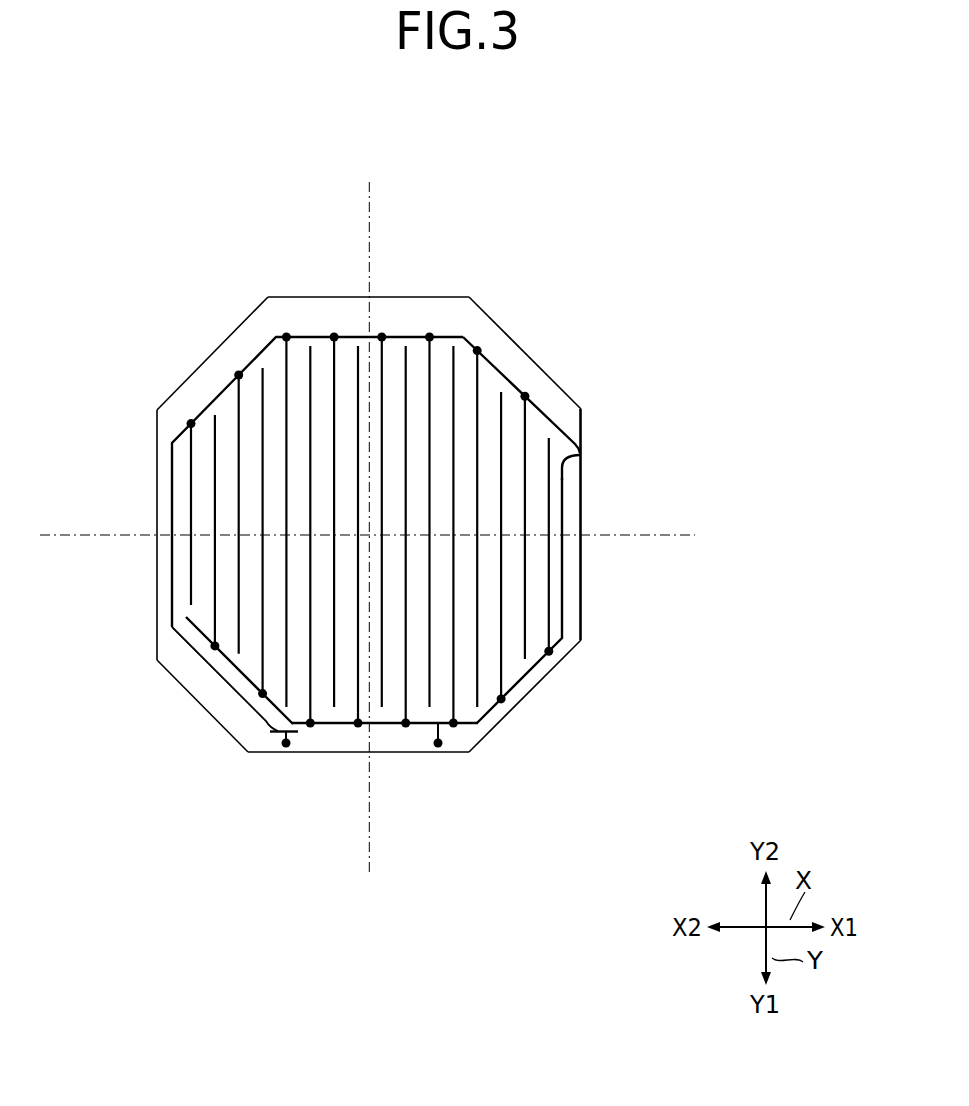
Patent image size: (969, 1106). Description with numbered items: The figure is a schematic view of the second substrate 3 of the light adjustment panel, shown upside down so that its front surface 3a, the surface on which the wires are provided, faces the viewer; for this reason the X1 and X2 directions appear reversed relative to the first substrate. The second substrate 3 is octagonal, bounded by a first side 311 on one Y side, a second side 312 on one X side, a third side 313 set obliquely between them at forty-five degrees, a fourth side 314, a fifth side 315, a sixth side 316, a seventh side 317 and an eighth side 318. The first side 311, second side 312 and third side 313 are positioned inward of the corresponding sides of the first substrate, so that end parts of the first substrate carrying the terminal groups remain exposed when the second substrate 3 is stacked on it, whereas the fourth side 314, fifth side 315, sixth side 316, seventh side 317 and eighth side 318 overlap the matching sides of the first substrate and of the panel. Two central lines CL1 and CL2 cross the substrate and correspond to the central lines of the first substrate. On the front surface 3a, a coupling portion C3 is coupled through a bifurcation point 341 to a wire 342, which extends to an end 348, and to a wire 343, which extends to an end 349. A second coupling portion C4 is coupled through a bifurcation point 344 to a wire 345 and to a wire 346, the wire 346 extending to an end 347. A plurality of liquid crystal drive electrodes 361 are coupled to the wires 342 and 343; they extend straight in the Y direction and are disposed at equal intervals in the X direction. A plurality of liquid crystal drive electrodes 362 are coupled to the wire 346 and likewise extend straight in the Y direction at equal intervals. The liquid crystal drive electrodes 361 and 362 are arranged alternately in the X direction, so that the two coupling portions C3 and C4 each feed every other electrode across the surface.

The second substrate 3 is at (565, 190).
The front surface 3a is at (305, 307).
The first side 311 is at (360, 755).
The second side 312 is at (582, 562).
The third side 313 is at (495, 730).
The fourth side 314 is at (552, 377).
The fifth side 315 is at (441, 297).
The sixth side 316 is at (210, 360).
The seventh side 317 is at (157, 593).
The eighth side 318 is at (180, 683).
The bifurcation point 341 is at (424, 727).
The wire 342 is at (563, 605).
The wire 343 is at (336, 728).
The bifurcation point 344 is at (258, 750).
The wire 345 is at (300, 755).
The wire 346 is at (353, 335).
The end 347 is at (577, 440).
The end 348 is at (581, 456).
The end 349 is at (182, 620).
The liquid crystal drive electrodes 361 is at (410, 632).
The liquid crystal drive electrodes 362 is at (333, 424).
The coupling portion C3 is at (440, 750).
The coupling portion C4 is at (286, 750).
The central line CL1 is at (372, 186).
The central line CL2 is at (690, 527).